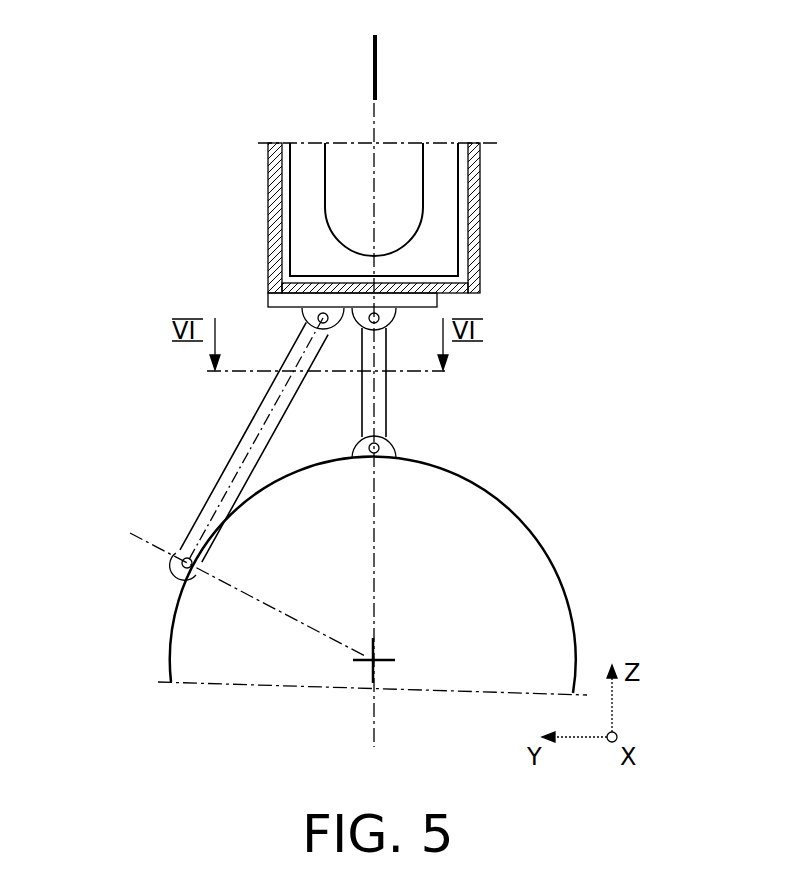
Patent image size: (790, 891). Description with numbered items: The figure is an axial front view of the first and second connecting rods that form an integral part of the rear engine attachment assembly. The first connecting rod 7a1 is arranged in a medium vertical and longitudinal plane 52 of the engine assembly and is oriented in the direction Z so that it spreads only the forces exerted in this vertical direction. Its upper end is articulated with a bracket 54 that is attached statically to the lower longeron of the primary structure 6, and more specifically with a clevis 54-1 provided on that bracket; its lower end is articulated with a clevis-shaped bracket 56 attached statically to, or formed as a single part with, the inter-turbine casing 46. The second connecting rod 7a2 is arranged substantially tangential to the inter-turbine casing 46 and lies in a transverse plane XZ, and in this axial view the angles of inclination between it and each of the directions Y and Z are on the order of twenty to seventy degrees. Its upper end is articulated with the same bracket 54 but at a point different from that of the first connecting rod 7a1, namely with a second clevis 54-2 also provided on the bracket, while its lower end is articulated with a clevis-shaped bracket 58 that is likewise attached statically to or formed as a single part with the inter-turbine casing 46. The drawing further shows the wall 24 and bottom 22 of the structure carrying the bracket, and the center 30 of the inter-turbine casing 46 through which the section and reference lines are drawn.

The medium vertical and longitudinal plane 52 is at (376, 62).
The container wall 24 is at (267, 188).
The container bottom 22 is at (442, 287).
The bracket 54 is at (408, 302).
The primary structure 6 is at (447, 178).
The clevis 54-1 is at (365, 316).
The clevis 54-2 is at (338, 316).
The first connecting rod 7a1 is at (387, 410).
The second connecting rod 7a2 is at (243, 448).
The clevis-shaped bracket 56 is at (397, 453).
The clevis-shaped bracket 58 is at (176, 565).
The inter-turbine casing 46 is at (173, 633).
The rotation center 30 is at (377, 663).